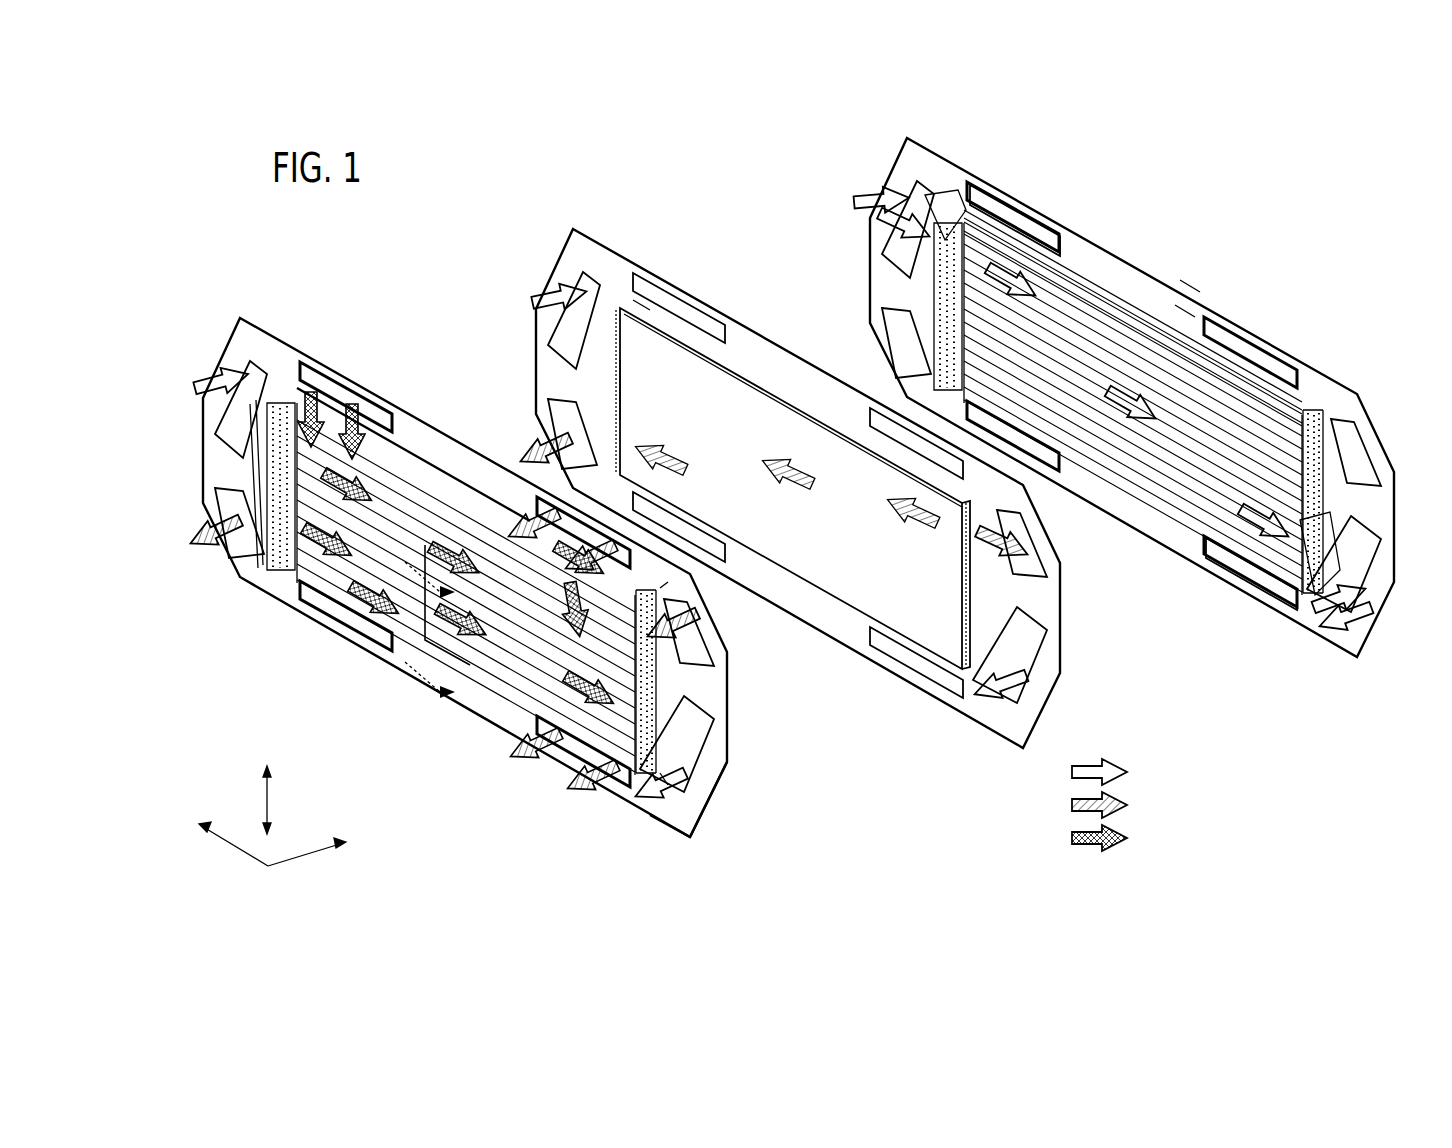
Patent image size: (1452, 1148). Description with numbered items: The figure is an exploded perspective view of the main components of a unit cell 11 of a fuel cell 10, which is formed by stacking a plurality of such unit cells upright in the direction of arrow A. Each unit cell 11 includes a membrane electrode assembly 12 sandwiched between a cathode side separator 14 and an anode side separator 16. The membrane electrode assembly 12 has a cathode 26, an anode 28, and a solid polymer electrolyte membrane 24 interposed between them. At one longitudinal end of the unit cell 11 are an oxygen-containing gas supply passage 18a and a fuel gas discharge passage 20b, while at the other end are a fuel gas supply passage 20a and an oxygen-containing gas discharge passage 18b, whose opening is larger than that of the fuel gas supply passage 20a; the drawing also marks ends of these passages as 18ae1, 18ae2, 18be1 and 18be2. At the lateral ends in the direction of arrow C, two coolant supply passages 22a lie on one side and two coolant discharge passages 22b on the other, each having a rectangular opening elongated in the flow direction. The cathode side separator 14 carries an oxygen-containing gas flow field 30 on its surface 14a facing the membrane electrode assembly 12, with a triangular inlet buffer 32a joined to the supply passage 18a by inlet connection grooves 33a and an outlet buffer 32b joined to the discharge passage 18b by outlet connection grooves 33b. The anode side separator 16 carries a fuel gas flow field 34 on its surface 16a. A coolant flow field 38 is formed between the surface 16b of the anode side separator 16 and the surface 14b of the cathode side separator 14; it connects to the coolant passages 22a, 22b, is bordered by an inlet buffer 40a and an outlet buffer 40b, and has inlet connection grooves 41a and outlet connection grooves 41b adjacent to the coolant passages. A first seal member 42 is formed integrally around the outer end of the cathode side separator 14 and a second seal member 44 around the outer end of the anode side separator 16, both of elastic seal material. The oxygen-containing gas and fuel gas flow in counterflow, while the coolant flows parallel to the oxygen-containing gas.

The fuel cell 10 is at (376, 229).
The unit cell 11 is at (343, 229).
The membrane electrode assembly 12 is at (556, 246).
The cathode side separator 14 is at (900, 148).
The surface of the cathode side separator 14a is at (1185, 305).
The surface of the cathode side separator 14b is at (1165, 270).
The anode side separator 16 is at (218, 350).
The surface of the anode side separator 16a is at (715, 797).
The surface of the anode side separator 16b is at (700, 828).
The oxygen-containing gas supply passage 18a is at (245, 380).
The oxygen-containing gas supply passage end 18ae1 is at (895, 240).
The oxygen-containing gas supply passage end 18ae2 is at (880, 185).
The oxygen-containing gas discharge passage 18b is at (700, 752).
The oxygen-containing gas discharge passage end 18be1 is at (1300, 600).
The oxygen-containing gas discharge passage end 18be2 is at (1320, 620).
The fuel gas supply passage 20a is at (705, 630).
The fuel gas discharge passage 20b is at (527, 440).
The coolant supply passage 22a is at (332, 374).
The coolant discharge passage 22b is at (540, 505).
The solid polymer electrolyte membrane 24 is at (1062, 605).
The cathode 26 is at (636, 300).
The anode 28 is at (618, 385).
The oxygen-containing gas flow field 30 is at (1070, 260).
The inlet buffer 32a is at (1000, 255).
The outlet buffer 32b is at (1265, 575).
The inlet connection grooves 33a is at (950, 215).
The outlet connection grooves 33b is at (1310, 580).
The fuel gas flow field 34 is at (430, 700).
The coolant flow field 38 is at (418, 470).
The inlet buffer 40a is at (270, 400).
The outlet buffer 40b is at (700, 725).
The inlet connection grooves 41a is at (395, 400).
The outlet connection grooves 41b is at (615, 455).
The first seal member 42 is at (1128, 265).
The second seal member 44 is at (420, 670).